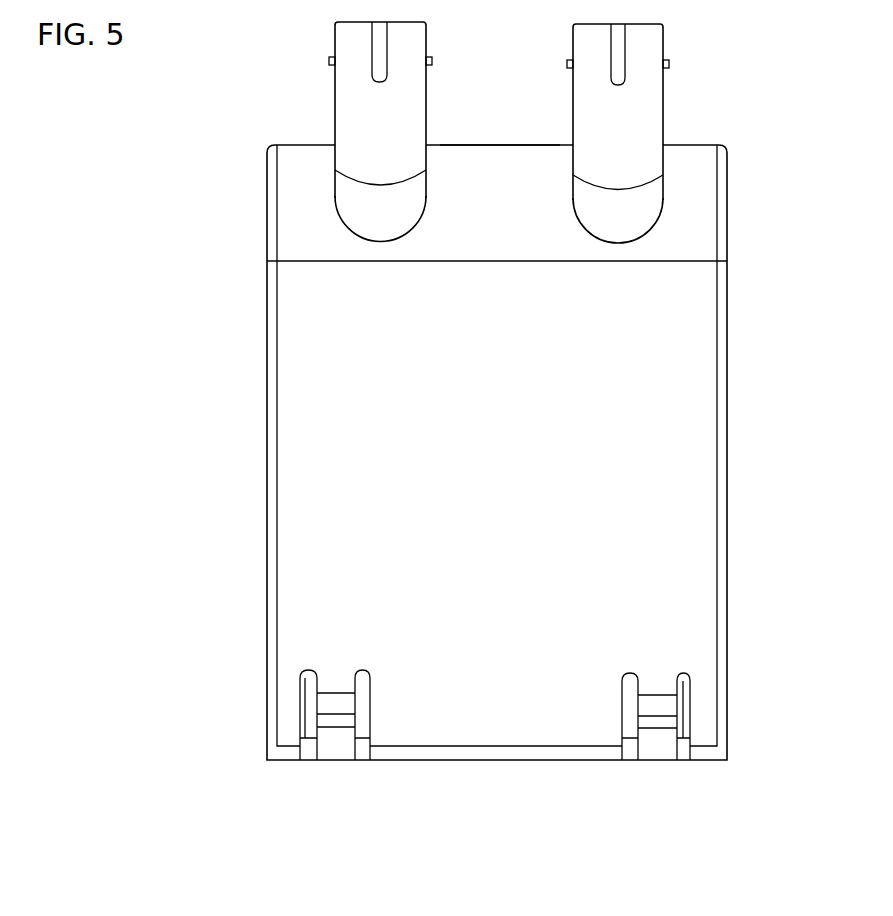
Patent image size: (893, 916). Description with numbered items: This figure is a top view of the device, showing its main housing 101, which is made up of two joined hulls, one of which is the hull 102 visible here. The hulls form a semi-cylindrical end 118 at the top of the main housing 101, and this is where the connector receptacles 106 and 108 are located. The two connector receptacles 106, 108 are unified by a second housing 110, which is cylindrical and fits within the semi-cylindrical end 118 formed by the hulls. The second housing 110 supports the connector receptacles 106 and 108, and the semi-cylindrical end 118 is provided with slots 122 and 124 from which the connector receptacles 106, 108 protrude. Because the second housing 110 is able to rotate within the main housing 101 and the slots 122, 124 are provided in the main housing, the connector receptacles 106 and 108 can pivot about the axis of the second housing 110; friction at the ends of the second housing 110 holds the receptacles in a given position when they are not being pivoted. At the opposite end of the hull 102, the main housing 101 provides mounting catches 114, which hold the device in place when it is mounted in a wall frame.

The main housing 101 is at (727, 568).
The hull 102 is at (697, 433).
The connector receptacle 106 is at (655, 87).
The connector receptacle 108 is at (352, 83).
The second housing 110 is at (343, 192).
The mounting catch 114 is at (656, 728).
The semi-cylindrical end 118 is at (472, 157).
The slot 122 is at (617, 243).
The slot 124 is at (382, 241).